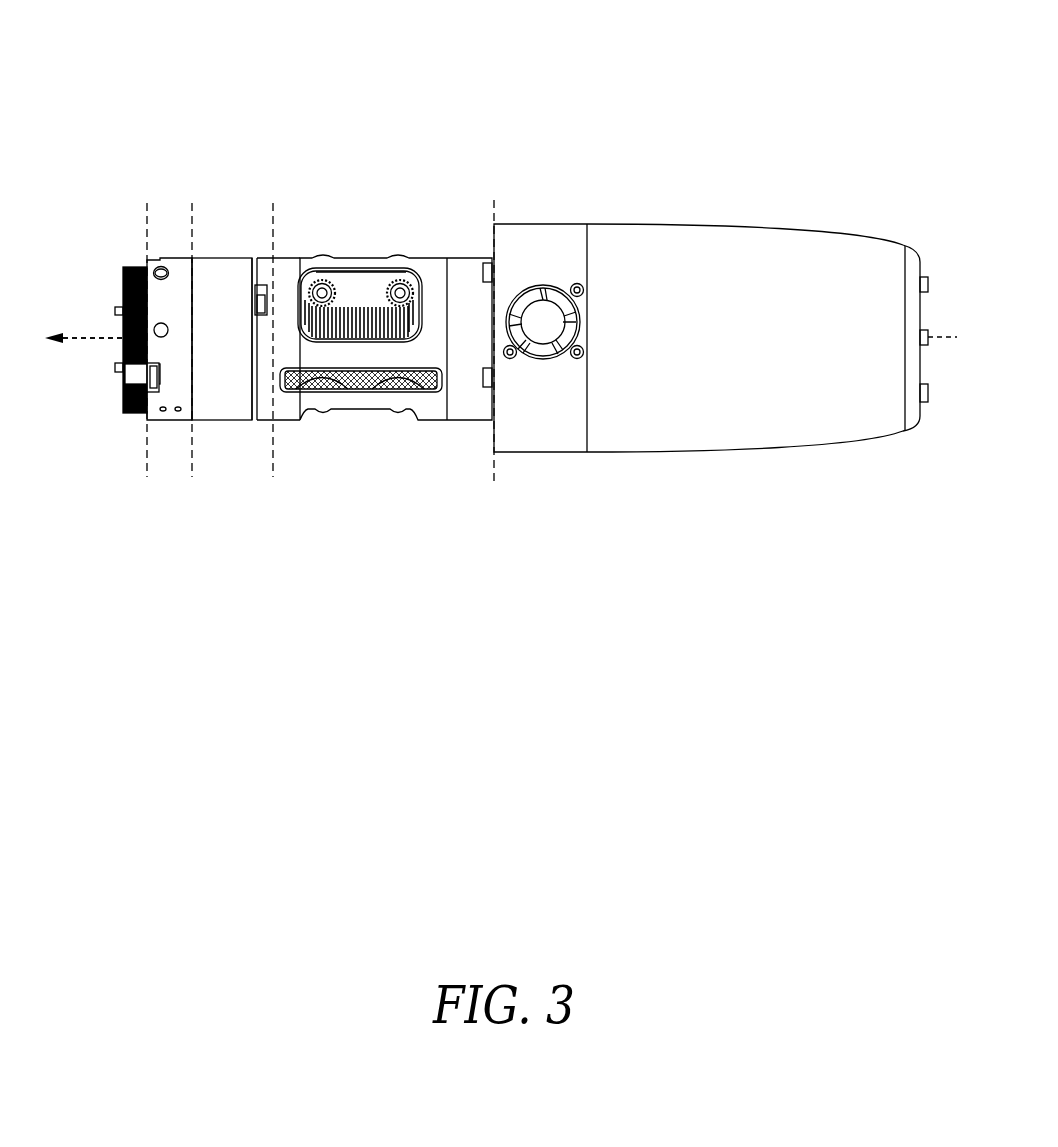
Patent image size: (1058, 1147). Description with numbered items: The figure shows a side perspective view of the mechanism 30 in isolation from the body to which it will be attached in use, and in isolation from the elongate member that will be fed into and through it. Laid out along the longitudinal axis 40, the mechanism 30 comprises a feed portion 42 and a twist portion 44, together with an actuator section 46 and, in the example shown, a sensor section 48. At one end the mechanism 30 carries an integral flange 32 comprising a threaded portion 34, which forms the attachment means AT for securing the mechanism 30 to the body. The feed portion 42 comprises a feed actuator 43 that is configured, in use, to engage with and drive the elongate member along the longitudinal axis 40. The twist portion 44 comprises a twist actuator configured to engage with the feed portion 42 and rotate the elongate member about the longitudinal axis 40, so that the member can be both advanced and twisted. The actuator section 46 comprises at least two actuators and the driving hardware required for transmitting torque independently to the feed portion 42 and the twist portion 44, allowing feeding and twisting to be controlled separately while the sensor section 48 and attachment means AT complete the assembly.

The mechanism 30 is at (748, 58).
The integral flange 32 is at (130, 454).
The threaded portion 34 is at (135, 266).
The longitudinal axis 40 is at (940, 340).
The feed portion 42 is at (365, 454).
The feed actuator 43 is at (358, 283).
The twist portion 44 is at (245, 454).
The actuator section 46 is at (718, 487).
The sensor section 48 is at (174, 454).
The attachment means AT is at (108, 428).